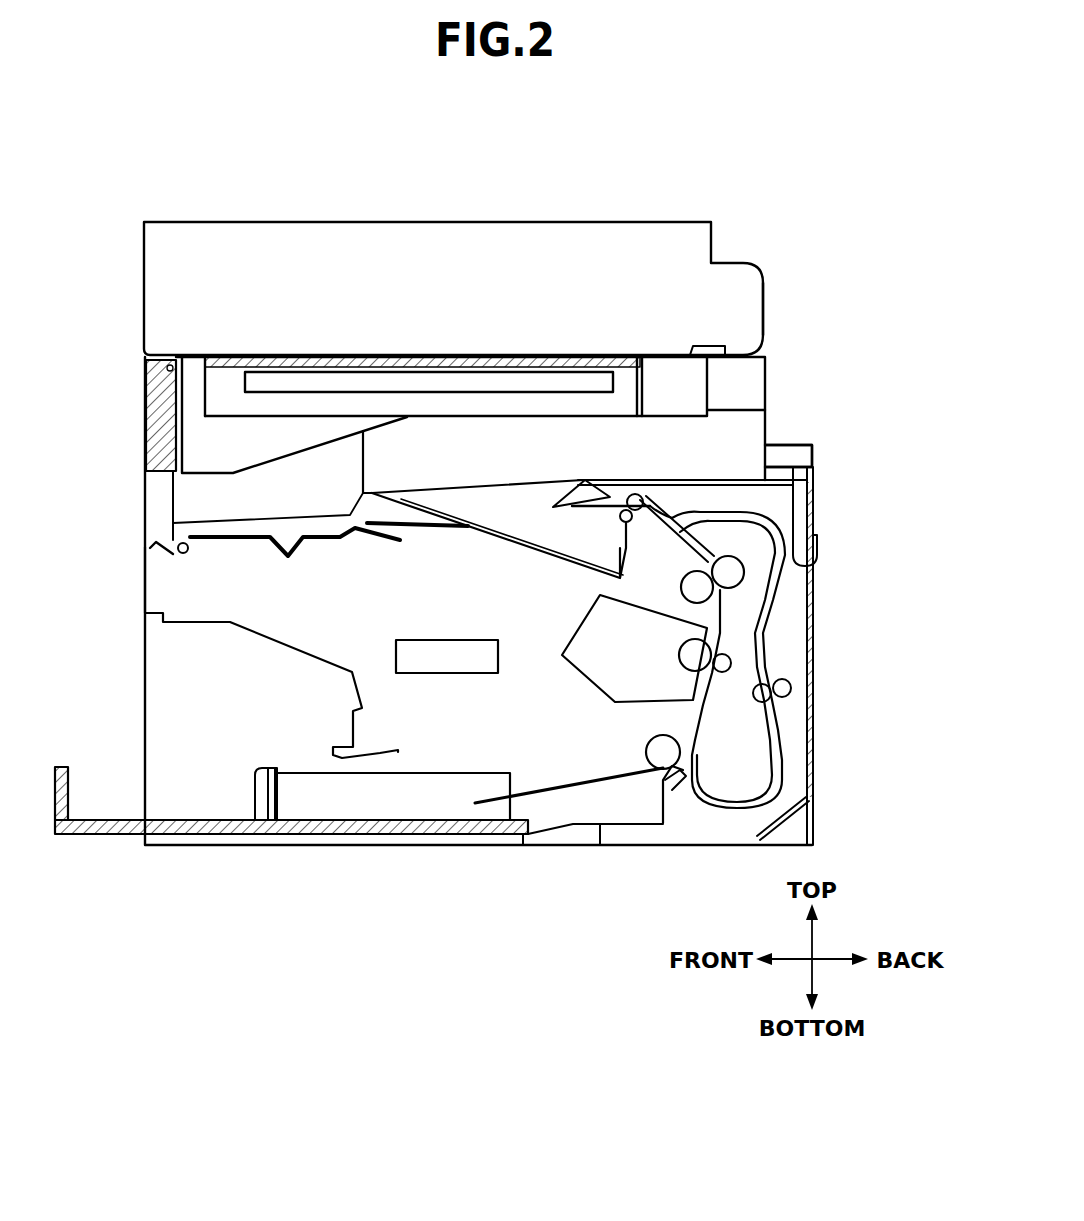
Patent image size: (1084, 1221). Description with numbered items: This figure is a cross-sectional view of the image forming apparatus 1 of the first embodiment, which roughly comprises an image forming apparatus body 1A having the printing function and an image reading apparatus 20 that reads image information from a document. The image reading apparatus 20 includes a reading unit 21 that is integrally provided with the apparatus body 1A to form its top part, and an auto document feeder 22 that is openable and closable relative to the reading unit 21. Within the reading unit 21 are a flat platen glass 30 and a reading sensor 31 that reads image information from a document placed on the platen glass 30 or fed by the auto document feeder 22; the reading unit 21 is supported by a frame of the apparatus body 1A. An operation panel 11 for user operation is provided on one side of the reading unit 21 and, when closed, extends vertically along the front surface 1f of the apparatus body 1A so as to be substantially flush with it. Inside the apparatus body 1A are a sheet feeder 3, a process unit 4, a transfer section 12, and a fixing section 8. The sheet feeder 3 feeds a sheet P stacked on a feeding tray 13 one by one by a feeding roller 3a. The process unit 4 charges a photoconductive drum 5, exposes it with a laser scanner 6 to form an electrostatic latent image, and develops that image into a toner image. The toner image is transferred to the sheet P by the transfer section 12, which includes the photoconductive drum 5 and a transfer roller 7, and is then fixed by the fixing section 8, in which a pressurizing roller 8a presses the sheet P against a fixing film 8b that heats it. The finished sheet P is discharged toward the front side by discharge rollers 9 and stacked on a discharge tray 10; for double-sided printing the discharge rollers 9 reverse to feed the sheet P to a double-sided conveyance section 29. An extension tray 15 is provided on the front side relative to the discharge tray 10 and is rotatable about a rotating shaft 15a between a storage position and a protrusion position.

The image forming apparatus 1 is at (424, 188).
The image forming apparatus body 1A is at (832, 456).
The front surface 1f is at (145, 575).
The sheet feeder 3 is at (685, 810).
The feeding roller 3a is at (663, 755).
The process unit 4 is at (560, 612).
The photoconductive drum 5 is at (686, 658).
The laser scanner 6 is at (400, 656).
The transfer roller 7 is at (727, 665).
The fixing section 8 is at (770, 545).
The pressurizing roller 8a is at (735, 575).
The fixing film 8b is at (702, 592).
The discharge rollers 9 is at (638, 494).
The discharge tray 10 is at (330, 527).
The operation panel 11 is at (145, 410).
The transfer section 12 is at (752, 638).
The feeding tray 13 is at (308, 820).
The extension tray 15 is at (218, 532).
The rotating shaft 15a is at (172, 548).
The image reading apparatus 20 is at (790, 288).
The reading unit 21 is at (765, 378).
The auto document feeder 22 is at (763, 318).
The double-sided conveyance section 29 is at (772, 696).
The platen glass 30 is at (525, 356).
The reading sensor 31 is at (585, 385).
The sheet P is at (572, 785).